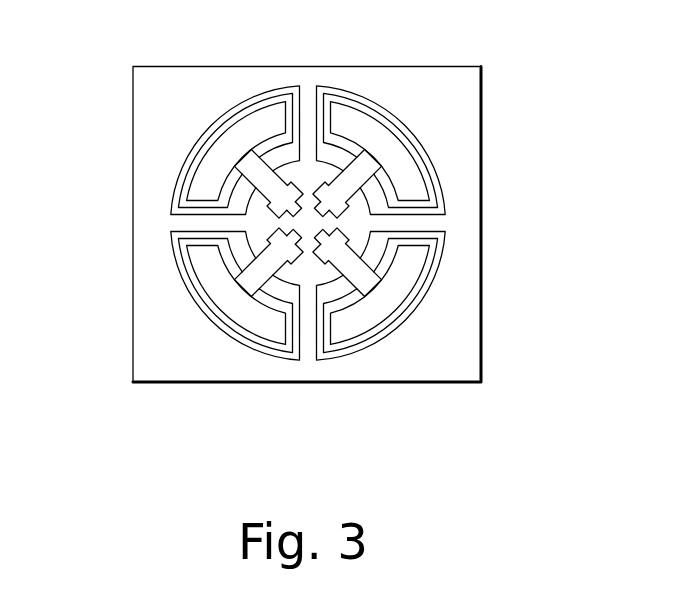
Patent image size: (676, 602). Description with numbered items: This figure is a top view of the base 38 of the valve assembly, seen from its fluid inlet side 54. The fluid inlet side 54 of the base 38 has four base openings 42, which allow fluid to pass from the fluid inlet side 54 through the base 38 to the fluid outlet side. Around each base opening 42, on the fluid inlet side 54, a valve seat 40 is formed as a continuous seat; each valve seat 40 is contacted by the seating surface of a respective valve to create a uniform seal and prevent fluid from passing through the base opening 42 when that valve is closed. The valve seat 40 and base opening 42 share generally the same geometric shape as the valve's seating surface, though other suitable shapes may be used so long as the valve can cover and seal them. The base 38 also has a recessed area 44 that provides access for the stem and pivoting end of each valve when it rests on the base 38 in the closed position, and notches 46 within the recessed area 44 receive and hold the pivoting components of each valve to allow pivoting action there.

The base 38 is at (424, 54).
The valve seat 40 is at (262, 153).
The base opening 42 is at (217, 166).
The recessed area 44 is at (283, 203).
The notch 46 is at (285, 267).
The fluid inlet side 54 is at (450, 350).